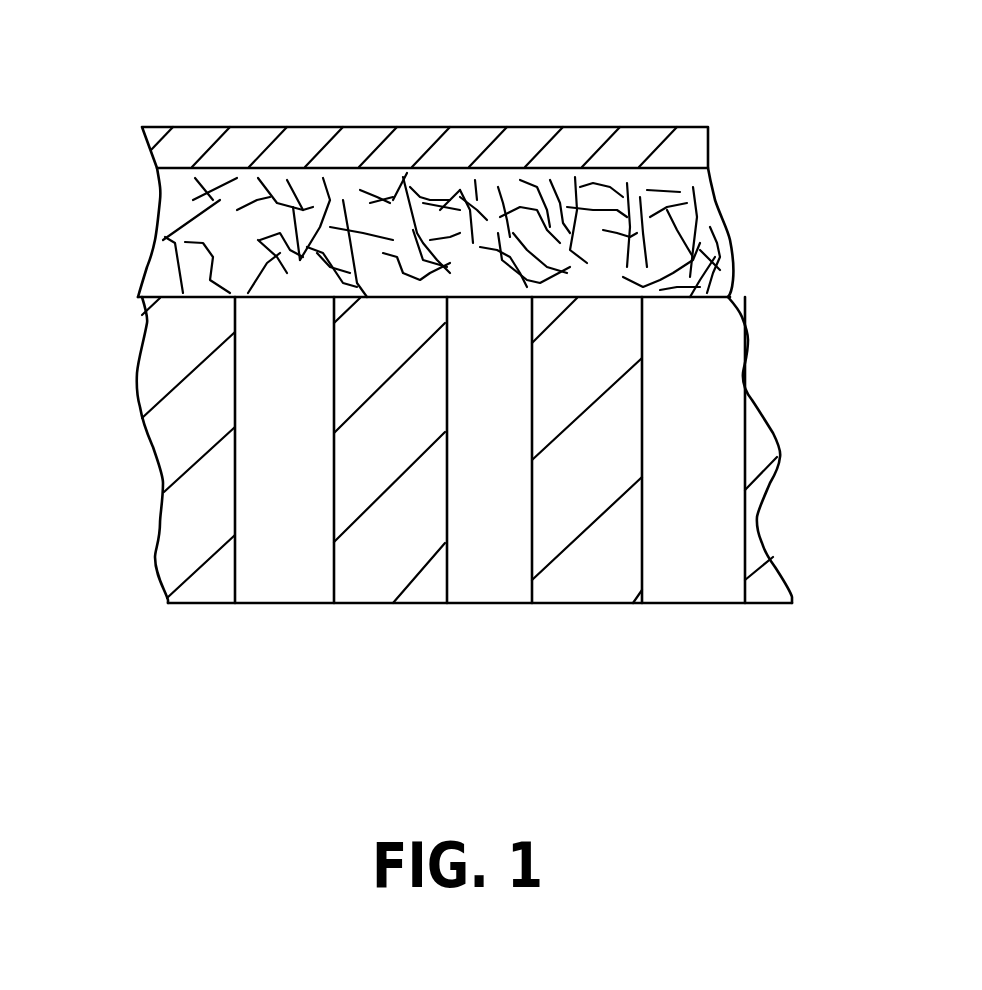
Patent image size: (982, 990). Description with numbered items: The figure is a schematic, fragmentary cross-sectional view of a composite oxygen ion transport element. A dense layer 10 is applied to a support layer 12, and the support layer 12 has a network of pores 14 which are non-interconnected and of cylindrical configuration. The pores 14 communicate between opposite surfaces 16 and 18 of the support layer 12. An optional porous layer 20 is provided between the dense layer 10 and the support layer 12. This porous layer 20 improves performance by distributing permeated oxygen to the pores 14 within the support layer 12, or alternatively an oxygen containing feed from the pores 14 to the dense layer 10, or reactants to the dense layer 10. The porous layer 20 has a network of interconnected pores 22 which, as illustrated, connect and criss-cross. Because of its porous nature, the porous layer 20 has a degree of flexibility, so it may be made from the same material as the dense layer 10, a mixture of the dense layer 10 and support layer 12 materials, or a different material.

The dense layer 10 is at (560, 122).
The support layer 12 is at (589, 618).
The pores 14 is at (238, 573).
The surface 16 is at (730, 258).
The surface 18 is at (210, 605).
The porous layer 20 is at (143, 247).
The interconnected pores 22 is at (213, 257).